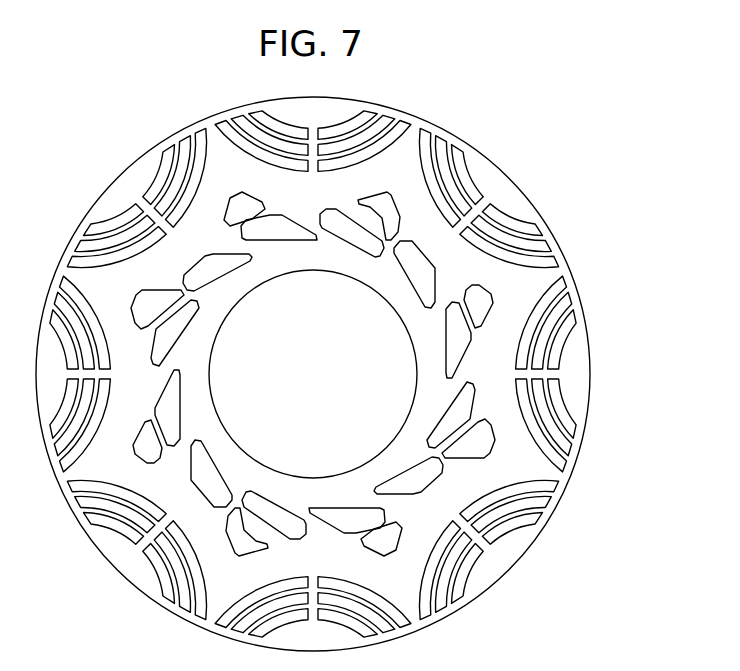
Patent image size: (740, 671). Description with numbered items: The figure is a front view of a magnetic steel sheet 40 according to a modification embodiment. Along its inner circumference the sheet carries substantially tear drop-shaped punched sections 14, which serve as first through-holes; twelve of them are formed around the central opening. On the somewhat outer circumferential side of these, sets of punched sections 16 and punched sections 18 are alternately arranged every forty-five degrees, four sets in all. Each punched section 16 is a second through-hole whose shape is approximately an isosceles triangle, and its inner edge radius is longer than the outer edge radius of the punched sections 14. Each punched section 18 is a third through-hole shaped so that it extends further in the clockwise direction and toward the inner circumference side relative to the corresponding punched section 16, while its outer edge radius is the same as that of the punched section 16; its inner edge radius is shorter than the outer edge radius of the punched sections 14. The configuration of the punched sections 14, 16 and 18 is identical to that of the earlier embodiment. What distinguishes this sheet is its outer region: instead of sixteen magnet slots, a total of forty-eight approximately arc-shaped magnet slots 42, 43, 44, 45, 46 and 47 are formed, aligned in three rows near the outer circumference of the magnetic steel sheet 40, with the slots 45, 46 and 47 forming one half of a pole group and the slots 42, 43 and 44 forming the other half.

The magnetic steel sheet 40 is at (551, 145).
The punched section 14 is at (175, 420).
The punched section 16 is at (242, 211).
The punched section 18 is at (384, 256).
The magnet slot 42 is at (520, 404).
The magnet slot 43 is at (547, 413).
The magnet slot 44 is at (569, 422).
The magnet slot 45 is at (521, 371).
The magnet slot 46 is at (548, 337).
The magnet slot 47 is at (570, 323).